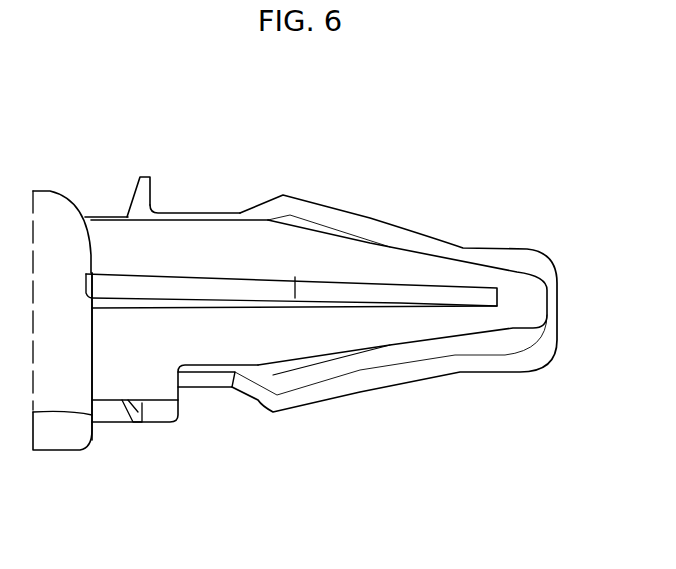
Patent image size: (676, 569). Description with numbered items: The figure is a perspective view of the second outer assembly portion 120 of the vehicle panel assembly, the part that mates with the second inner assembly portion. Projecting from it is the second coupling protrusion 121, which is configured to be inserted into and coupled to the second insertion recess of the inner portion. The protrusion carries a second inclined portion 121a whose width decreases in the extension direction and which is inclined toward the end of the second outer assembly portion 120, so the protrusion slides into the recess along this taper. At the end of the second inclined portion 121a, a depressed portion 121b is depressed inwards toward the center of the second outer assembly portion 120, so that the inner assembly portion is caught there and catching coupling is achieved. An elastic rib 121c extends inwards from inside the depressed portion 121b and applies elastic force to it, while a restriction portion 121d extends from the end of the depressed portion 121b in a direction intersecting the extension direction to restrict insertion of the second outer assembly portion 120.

The second outer assembly portion 120 is at (525, 125).
The second coupling protrusion 121 is at (305, 413).
The second inclined portion 121a is at (323, 212).
The depressed portion 121b is at (204, 378).
The elastic rib 121c is at (206, 217).
The restriction portion 121d is at (143, 180).